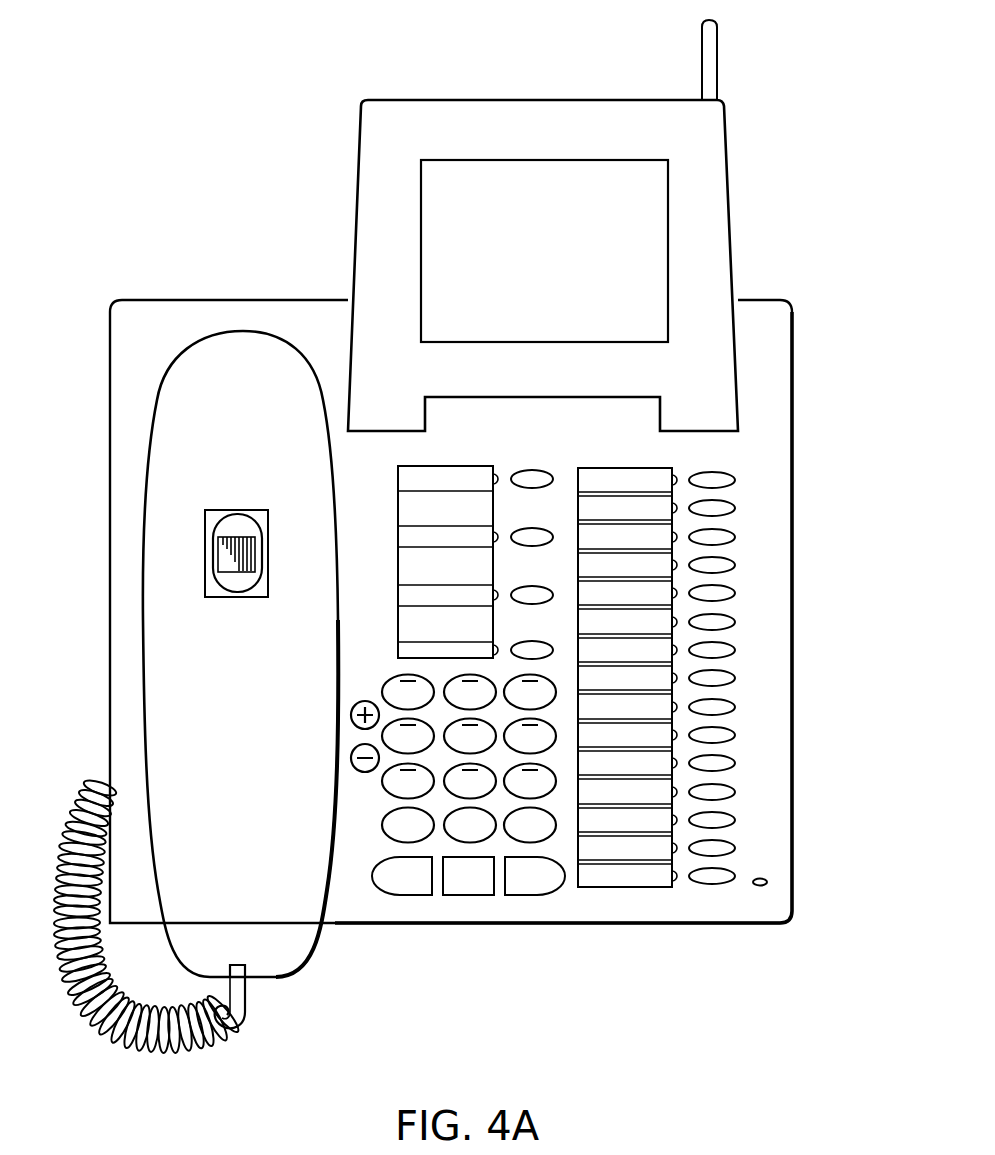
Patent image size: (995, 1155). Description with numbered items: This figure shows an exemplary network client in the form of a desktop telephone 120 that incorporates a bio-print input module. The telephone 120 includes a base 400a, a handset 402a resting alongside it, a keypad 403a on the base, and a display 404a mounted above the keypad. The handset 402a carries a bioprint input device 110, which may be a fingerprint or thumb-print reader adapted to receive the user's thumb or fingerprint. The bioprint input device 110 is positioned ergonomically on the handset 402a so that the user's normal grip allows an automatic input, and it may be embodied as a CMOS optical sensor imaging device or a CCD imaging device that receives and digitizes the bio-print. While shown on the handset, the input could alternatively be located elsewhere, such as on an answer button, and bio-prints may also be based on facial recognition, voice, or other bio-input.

The bioprint input device 110 is at (217, 548).
The desktop telephone 120 is at (830, 283).
The base 400a is at (765, 583).
The handset 402a is at (183, 678).
The keypad 403a is at (547, 831).
The display 404a is at (702, 193).